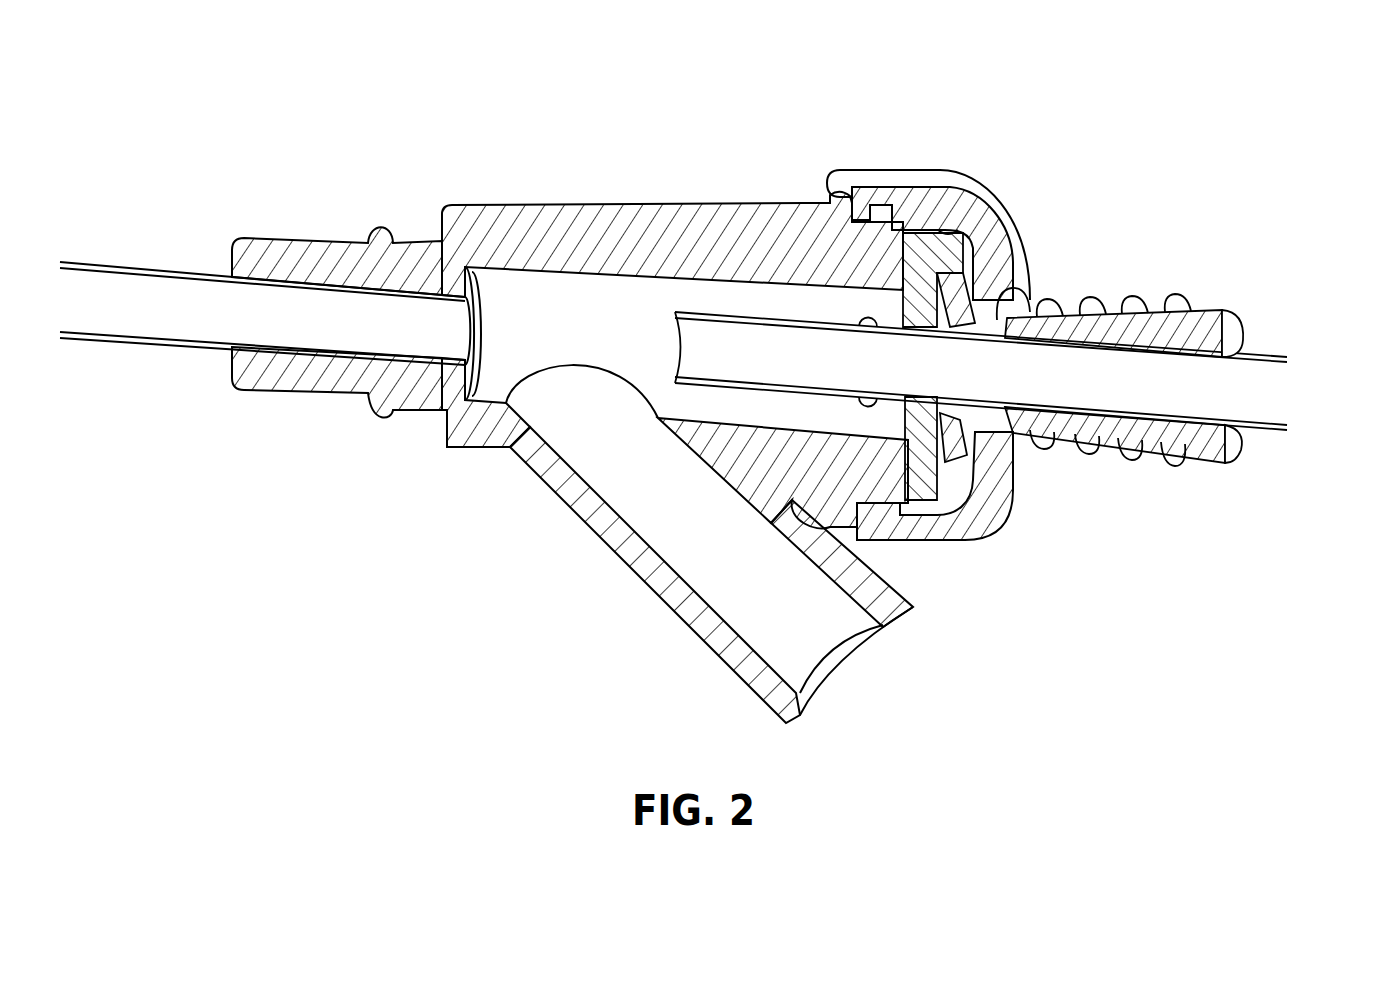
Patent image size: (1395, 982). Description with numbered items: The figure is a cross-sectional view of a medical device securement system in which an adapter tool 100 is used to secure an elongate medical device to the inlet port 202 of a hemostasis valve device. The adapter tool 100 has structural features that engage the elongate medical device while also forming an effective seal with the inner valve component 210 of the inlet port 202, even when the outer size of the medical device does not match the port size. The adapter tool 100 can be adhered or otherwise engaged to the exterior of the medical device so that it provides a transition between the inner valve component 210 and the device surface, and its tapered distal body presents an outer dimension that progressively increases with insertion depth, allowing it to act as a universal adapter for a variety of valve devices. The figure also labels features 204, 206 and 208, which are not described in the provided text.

The adapter tool 100 is at (1243, 288).
The inlet port 202 is at (1082, 178).
The cap 204 is at (1040, 478).
The sealing barb 206 is at (1017, 303).
The tubing 208 is at (1290, 385).
The inner valve component 210 is at (950, 228).